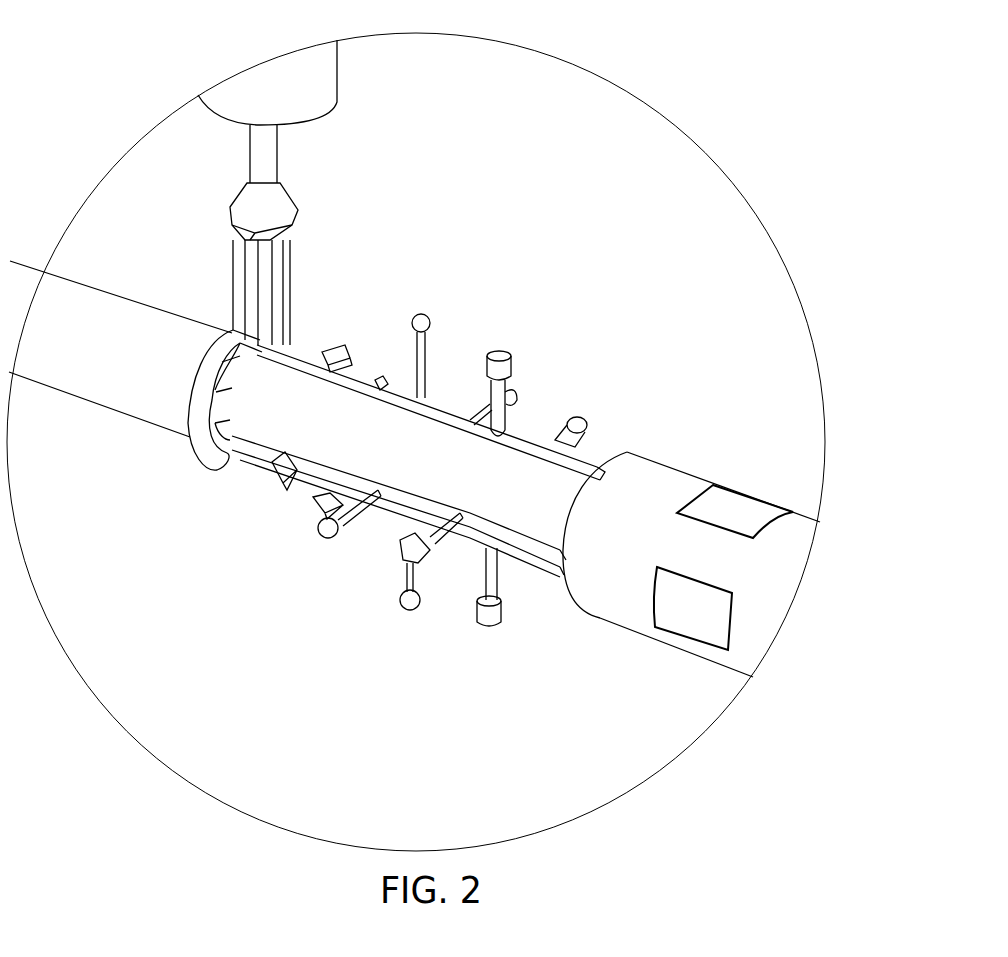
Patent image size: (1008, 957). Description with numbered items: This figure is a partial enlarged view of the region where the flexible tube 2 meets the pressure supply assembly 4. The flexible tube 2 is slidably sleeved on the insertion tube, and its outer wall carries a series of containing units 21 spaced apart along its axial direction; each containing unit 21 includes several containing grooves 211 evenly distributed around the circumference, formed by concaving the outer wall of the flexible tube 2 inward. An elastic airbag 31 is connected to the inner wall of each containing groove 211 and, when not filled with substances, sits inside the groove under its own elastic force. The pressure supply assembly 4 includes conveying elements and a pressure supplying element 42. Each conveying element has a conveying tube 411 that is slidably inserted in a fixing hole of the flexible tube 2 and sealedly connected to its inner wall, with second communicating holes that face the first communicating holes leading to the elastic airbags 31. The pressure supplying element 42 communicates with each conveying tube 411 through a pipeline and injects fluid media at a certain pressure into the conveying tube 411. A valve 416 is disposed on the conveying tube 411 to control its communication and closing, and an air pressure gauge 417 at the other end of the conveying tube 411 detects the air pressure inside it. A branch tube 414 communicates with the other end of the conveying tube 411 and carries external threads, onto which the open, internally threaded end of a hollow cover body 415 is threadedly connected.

The flexible tube 2 is at (660, 478).
The containing unit 21 is at (867, 623).
The containing groove 211 is at (753, 520).
The elastic airbag 31 is at (695, 630).
The pressure supply assembly 4 is at (173, 263).
The pressure supplying element 42 is at (268, 90).
The conveying tube 411 is at (587, 458).
The branch tube 414 is at (513, 410).
The cover body 415 is at (505, 348).
The valve 416 is at (345, 338).
The air pressure gauge 417 is at (423, 318).